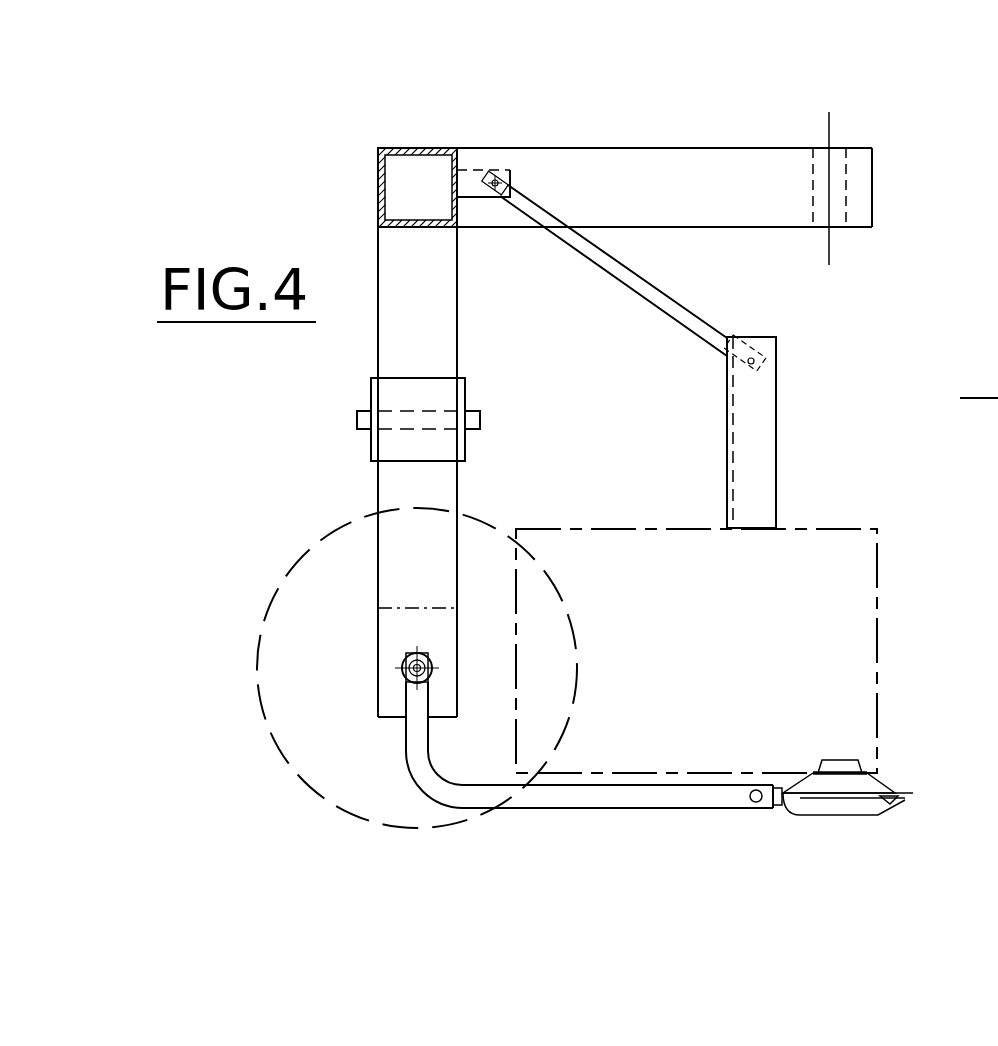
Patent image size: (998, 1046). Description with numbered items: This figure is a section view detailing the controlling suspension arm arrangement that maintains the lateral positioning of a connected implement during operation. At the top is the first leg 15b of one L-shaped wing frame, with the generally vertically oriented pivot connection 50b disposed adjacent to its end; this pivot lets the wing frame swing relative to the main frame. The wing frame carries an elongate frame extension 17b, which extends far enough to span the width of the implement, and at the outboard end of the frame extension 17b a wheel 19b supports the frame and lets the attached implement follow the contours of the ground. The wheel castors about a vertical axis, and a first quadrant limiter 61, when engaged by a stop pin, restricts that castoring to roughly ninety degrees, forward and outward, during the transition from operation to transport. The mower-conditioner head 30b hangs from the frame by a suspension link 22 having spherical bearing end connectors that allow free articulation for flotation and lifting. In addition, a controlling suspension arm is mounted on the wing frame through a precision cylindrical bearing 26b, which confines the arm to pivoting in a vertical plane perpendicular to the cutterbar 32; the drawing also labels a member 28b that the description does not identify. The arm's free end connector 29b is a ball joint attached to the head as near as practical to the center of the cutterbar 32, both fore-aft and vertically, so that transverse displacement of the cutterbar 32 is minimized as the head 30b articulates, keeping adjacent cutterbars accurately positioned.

The first leg 15b is at (555, 170).
The frame extension 17b is at (422, 170).
The wheel 19b is at (325, 582).
The suspension link 22 is at (677, 300).
The precision cylindrical bearing 26b is at (405, 680).
The bent tube 28b is at (583, 798).
The free end connector 29b is at (753, 802).
The mower-conditioner head 30b is at (817, 642).
The cutterbar 32 is at (907, 802).
The pivot connection 50b is at (830, 138).
The first quadrant limiter 61 is at (977, 478).